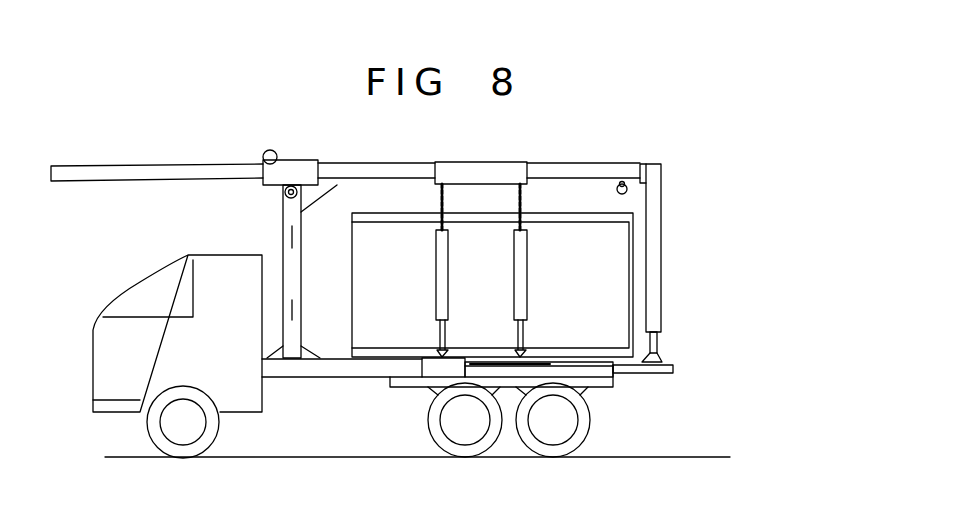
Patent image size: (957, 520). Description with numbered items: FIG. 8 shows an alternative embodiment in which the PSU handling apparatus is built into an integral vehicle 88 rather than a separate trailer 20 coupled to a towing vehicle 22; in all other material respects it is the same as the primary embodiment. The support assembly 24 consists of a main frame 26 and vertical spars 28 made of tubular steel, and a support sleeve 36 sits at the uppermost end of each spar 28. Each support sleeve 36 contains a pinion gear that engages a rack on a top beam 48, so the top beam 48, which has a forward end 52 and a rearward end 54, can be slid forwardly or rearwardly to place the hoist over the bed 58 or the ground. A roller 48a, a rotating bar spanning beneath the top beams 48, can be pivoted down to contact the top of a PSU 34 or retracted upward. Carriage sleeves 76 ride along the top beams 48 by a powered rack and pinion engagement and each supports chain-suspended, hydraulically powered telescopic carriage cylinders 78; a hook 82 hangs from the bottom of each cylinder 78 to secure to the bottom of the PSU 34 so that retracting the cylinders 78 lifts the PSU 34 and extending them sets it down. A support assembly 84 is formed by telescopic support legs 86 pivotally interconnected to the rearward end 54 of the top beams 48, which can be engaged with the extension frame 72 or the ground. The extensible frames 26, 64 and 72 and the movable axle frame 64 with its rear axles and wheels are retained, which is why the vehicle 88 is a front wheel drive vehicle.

The trailer 20 is at (277, 365).
The towing vehicle 22 is at (122, 383).
The support assembly 24 is at (281, 212).
The main frame 26 is at (317, 374).
The vertical spars 28 is at (282, 243).
The PSU 34 is at (393, 308).
The support sleeve 36 is at (288, 156).
The top beams 48 is at (417, 162).
The roller 48a is at (625, 182).
The forward end 52 is at (79, 173).
The rearward end 54 is at (663, 173).
The bed 58 is at (422, 360).
The axle frame 64 is at (603, 387).
The extension frame 72 is at (673, 368).
The carriage sleeves 76 is at (508, 162).
The carriage cylinders 78 is at (436, 249).
The hook 82 is at (447, 347).
The support assembly 84 is at (704, 258).
The support legs 86 is at (688, 325).
The integral vehicle 88 is at (688, 131).